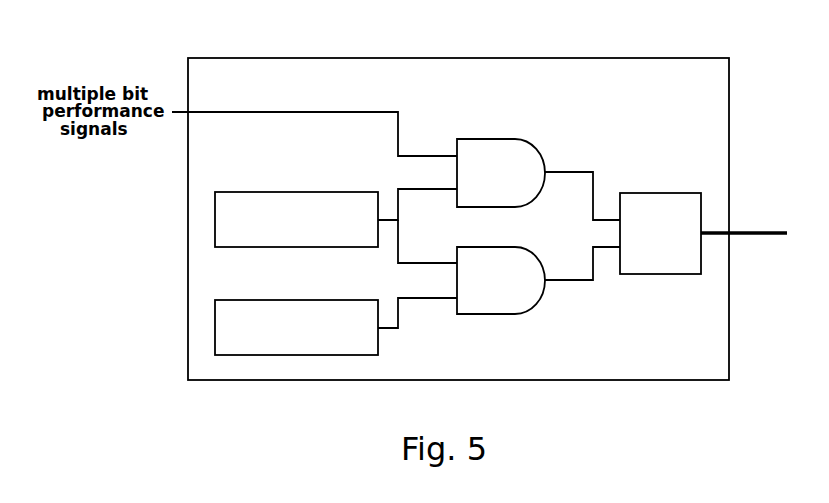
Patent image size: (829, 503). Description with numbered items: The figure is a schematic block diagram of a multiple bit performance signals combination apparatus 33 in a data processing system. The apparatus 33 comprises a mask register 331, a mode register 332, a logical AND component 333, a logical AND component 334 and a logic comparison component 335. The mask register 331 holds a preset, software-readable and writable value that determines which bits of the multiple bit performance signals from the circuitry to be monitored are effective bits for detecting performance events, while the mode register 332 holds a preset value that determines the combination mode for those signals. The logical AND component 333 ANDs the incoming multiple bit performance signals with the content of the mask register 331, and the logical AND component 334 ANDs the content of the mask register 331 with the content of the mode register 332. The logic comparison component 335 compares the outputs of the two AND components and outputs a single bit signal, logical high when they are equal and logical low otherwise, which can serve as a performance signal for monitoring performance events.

The multiple bit performance signals combination apparatus 33 is at (552, 58).
The mask register 331 is at (292, 190).
The mode register 332 is at (292, 299).
The logical AND component 333 is at (483, 137).
The logical AND component 334 is at (485, 315).
The logic comparison component 335 is at (662, 192).